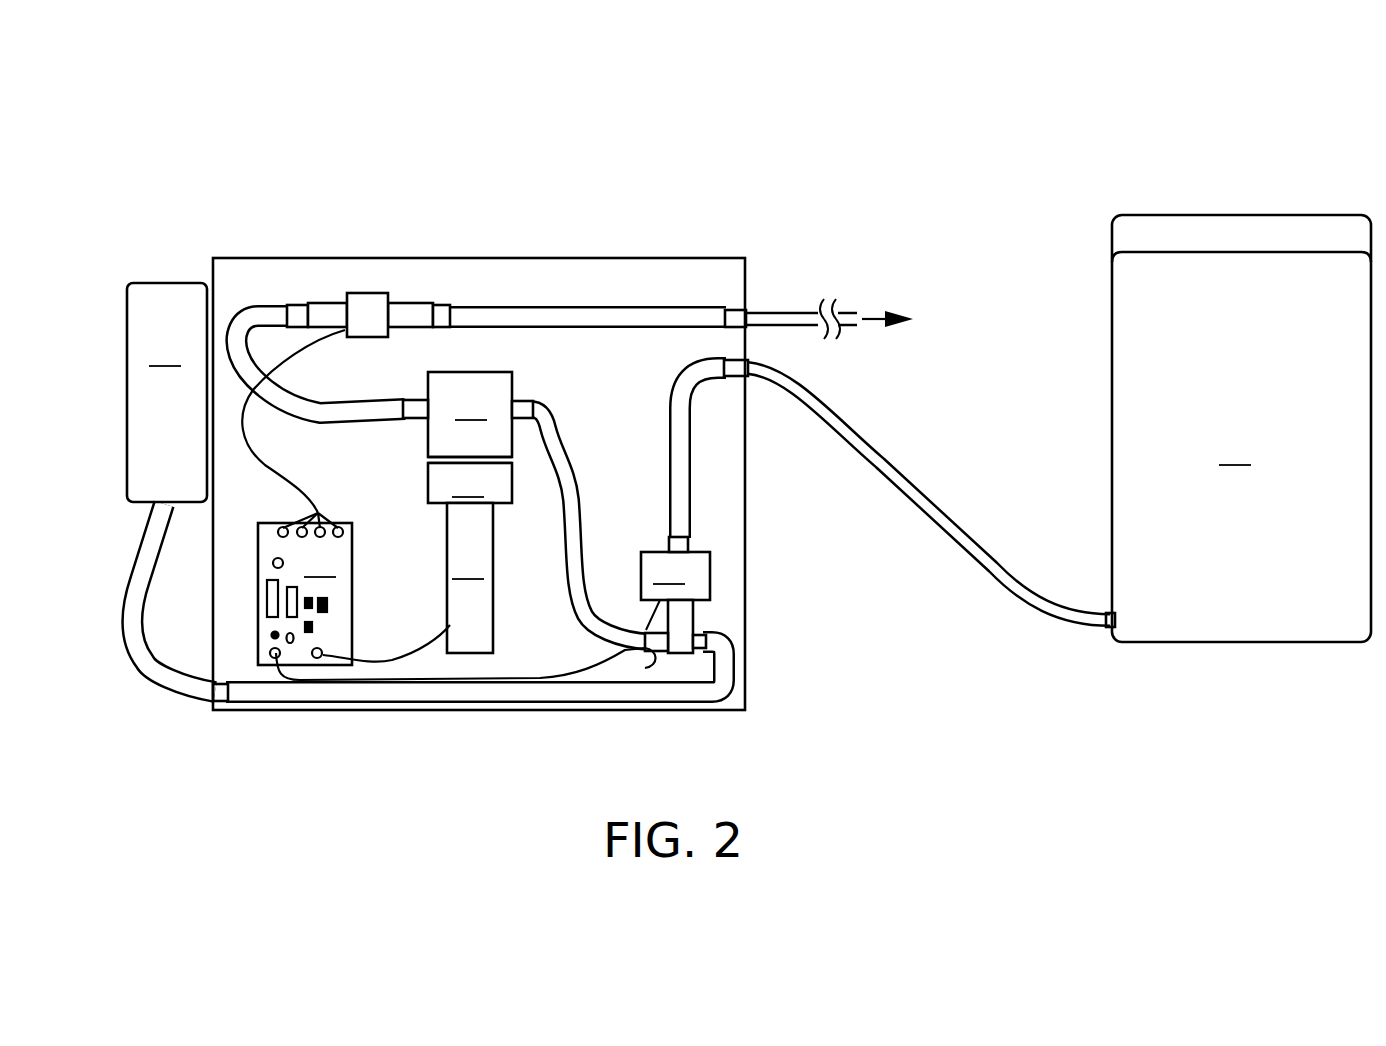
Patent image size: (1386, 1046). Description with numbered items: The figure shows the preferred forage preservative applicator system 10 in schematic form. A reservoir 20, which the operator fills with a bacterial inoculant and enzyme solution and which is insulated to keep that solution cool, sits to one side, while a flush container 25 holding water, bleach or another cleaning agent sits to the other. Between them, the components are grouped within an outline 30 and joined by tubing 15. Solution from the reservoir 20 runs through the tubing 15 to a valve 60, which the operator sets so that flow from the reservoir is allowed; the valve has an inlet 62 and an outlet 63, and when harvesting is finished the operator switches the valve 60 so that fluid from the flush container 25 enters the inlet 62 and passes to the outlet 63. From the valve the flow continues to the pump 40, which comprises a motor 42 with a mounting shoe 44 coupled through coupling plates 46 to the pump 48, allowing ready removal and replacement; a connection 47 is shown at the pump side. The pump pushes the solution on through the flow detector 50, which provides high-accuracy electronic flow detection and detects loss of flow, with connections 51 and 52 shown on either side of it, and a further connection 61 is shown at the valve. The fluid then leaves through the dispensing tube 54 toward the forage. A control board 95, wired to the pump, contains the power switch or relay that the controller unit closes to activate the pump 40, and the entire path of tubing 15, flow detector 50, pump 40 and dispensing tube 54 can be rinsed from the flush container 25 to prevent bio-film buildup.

The forage preservative applicator system 10 is at (215, 84).
The tubing 15 is at (254, 313).
The reservoir 20 is at (1241, 428).
The flush container 25 is at (167, 392).
The enclosure 30 is at (600, 236).
The pump 40 is at (428, 525).
The motor 42 is at (470, 578).
The mounting shoe 44 is at (470, 483).
The coupling plates 46 is at (432, 462).
The pump outlet fitting 47 is at (518, 399).
The pump 48 is at (470, 414).
The flow detector 50 is at (367, 282).
The inlet fitting 51 is at (330, 313).
The outlet fitting 52 is at (415, 313).
The dispensing tube 54 is at (788, 312).
The valve 60 is at (675, 576).
The valve inlet fitting 61 is at (690, 544).
The inlet 62 is at (706, 636).
The outlet 63 is at (645, 652).
The control board 95 is at (448, 505).